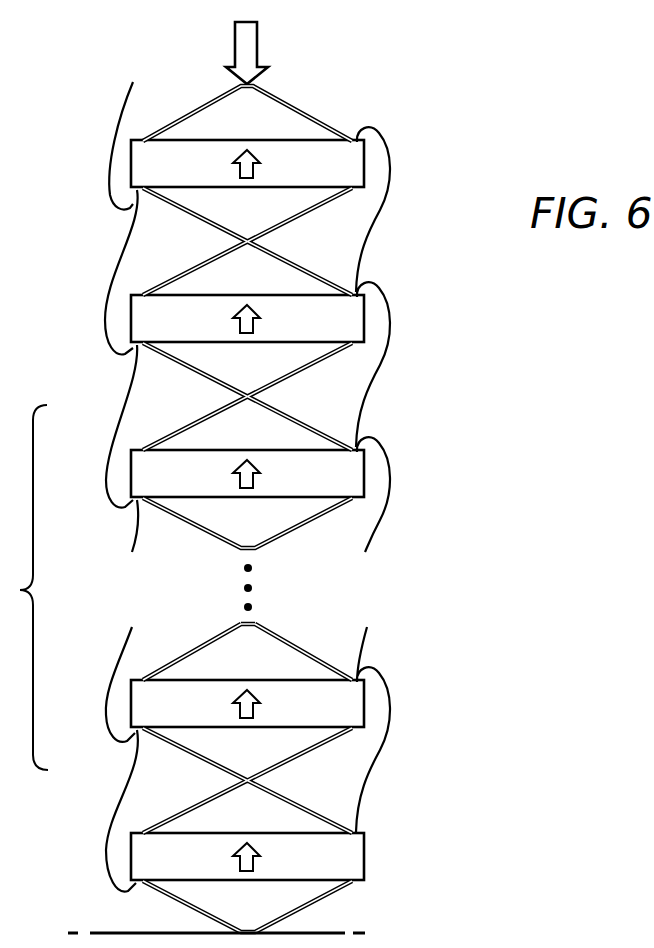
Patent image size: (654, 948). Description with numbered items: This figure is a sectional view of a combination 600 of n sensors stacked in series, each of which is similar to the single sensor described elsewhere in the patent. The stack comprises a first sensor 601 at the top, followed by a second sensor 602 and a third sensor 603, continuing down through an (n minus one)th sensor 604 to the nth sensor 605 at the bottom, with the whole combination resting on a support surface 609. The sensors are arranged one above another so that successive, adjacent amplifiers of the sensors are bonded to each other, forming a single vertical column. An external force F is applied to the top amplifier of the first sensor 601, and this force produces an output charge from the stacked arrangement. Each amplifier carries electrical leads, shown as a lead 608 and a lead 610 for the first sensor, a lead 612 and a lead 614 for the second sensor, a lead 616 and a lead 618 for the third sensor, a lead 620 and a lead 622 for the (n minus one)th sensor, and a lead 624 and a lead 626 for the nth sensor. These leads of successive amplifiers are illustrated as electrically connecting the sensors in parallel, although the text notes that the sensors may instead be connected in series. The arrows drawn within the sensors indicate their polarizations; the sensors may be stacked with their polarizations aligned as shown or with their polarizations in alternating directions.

The combination 600 is at (473, 347).
The sensor 601 is at (283, 188).
The sensor 602 is at (283, 343).
The sensor 603 is at (285, 498).
The sensor 604 is at (285, 728).
The sensor 605 is at (288, 881).
The lead 608 is at (362, 128).
The support surface 609 is at (124, 933).
The lead 610 is at (118, 118).
The lead 612 is at (365, 237).
The lead 614 is at (113, 272).
The lead 616 is at (365, 393).
The lead 618 is at (119, 433).
The lead 620 is at (367, 637).
The lead 622 is at (121, 657).
The lead 624 is at (367, 773).
The lead 626 is at (122, 809).